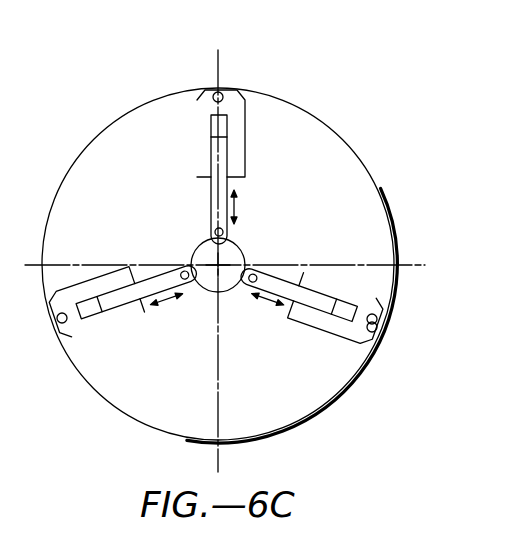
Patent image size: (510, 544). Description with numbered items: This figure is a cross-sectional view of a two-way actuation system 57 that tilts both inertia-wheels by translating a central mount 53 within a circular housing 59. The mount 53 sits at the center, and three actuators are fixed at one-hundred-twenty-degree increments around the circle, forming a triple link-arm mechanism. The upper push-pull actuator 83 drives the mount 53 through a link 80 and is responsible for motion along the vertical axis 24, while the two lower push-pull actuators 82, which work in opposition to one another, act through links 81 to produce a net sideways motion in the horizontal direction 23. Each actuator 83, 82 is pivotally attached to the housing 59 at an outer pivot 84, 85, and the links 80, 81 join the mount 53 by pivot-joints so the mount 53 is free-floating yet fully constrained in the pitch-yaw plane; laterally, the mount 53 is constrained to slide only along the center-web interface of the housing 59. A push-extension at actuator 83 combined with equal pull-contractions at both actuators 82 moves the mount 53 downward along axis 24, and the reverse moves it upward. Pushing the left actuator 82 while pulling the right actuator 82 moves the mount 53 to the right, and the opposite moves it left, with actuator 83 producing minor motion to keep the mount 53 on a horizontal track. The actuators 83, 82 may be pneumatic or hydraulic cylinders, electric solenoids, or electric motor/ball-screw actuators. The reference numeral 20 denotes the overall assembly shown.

The chuck assembly 20 is at (232, 265).
The horizontal direction 23 is at (247, 267).
The vertical axis 24 is at (215, 246).
The mount 53 is at (240, 244).
The two-way actuation system 57 is at (216, 230).
The housing 59 is at (367, 173).
The link 80 is at (211, 207).
The links 81 is at (166, 276).
The push-pull actuators 82 is at (102, 273).
The push-pull actuator 83 is at (245, 148).
The pivot pin 84 is at (222, 92).
The pivot pin 85 is at (56, 318).